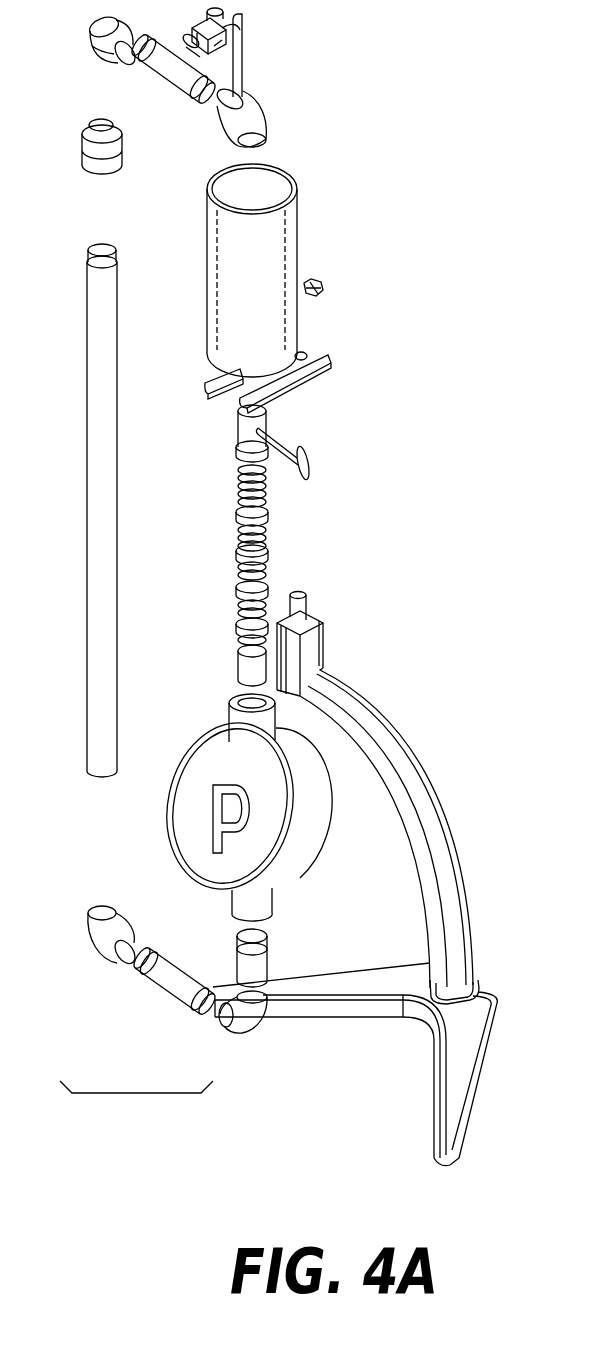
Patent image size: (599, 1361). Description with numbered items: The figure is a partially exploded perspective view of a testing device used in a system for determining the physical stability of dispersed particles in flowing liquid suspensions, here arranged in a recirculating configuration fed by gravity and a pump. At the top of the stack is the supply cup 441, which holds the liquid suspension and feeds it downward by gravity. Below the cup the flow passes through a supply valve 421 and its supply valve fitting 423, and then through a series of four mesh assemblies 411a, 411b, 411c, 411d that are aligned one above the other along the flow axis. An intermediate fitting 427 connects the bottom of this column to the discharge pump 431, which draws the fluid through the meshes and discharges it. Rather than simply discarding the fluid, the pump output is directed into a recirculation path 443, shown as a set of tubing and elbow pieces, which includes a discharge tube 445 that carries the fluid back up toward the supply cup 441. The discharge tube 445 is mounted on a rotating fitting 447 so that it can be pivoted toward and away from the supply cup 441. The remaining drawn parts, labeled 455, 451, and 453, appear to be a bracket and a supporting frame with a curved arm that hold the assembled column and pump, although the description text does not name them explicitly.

The discharge tube 445 is at (268, 117).
The rotating fitting 447 is at (80, 152).
The supply cup 441 is at (215, 237).
The mounting bracket 455 is at (312, 370).
The supply valve 421 is at (258, 428).
The supply valve fitting 423 is at (240, 495).
The mesh assembly 411a is at (240, 517).
The mesh assembly 411b is at (240, 553).
The mesh assembly 411c is at (240, 590).
The mesh assembly 411d is at (240, 627).
The intermediate fitting 427 is at (240, 658).
The discharge pump 431 is at (178, 826).
The frame 451 is at (378, 654).
The curved arm 453 is at (413, 745).
The recirculation path 443 is at (132, 1095).